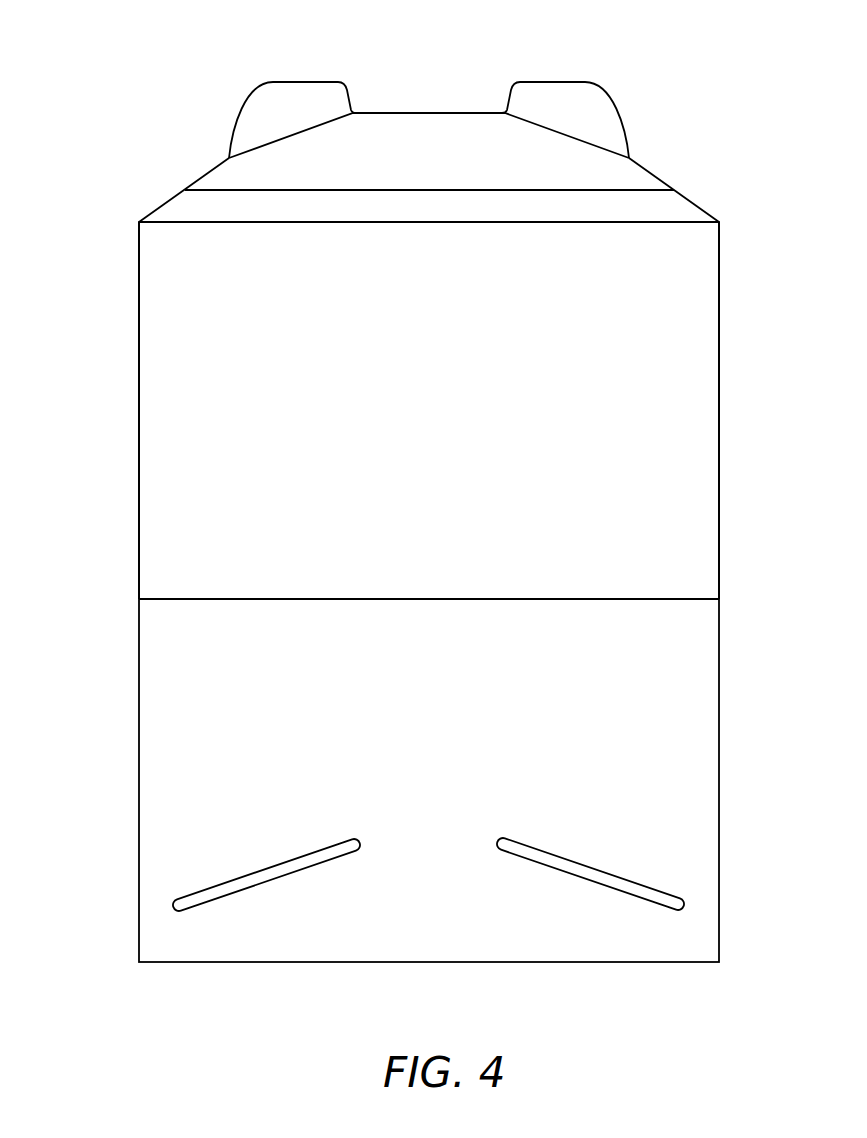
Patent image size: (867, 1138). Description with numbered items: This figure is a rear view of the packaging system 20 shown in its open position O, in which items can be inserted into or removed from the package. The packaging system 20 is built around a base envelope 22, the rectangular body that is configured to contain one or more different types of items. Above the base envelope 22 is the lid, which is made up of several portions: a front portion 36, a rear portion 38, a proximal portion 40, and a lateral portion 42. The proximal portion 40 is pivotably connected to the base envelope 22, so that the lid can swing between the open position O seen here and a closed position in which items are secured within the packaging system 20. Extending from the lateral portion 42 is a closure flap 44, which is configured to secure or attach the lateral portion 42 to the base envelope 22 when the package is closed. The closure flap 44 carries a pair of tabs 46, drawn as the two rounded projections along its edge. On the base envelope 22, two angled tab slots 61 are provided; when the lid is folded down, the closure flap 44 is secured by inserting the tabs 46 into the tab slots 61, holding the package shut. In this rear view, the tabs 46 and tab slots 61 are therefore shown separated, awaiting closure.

The packaging system 20 is at (126, 87).
The base envelope 22 is at (700, 713).
The front portion 36 is at (685, 456).
The rear portion 38 is at (705, 273).
The proximal portion 40 is at (699, 546).
The lateral portion 42 is at (677, 207).
The closure flap 44 is at (483, 123).
The tab 46 is at (555, 90).
The tab slot 61 is at (620, 885).
The open position O is at (163, 492).